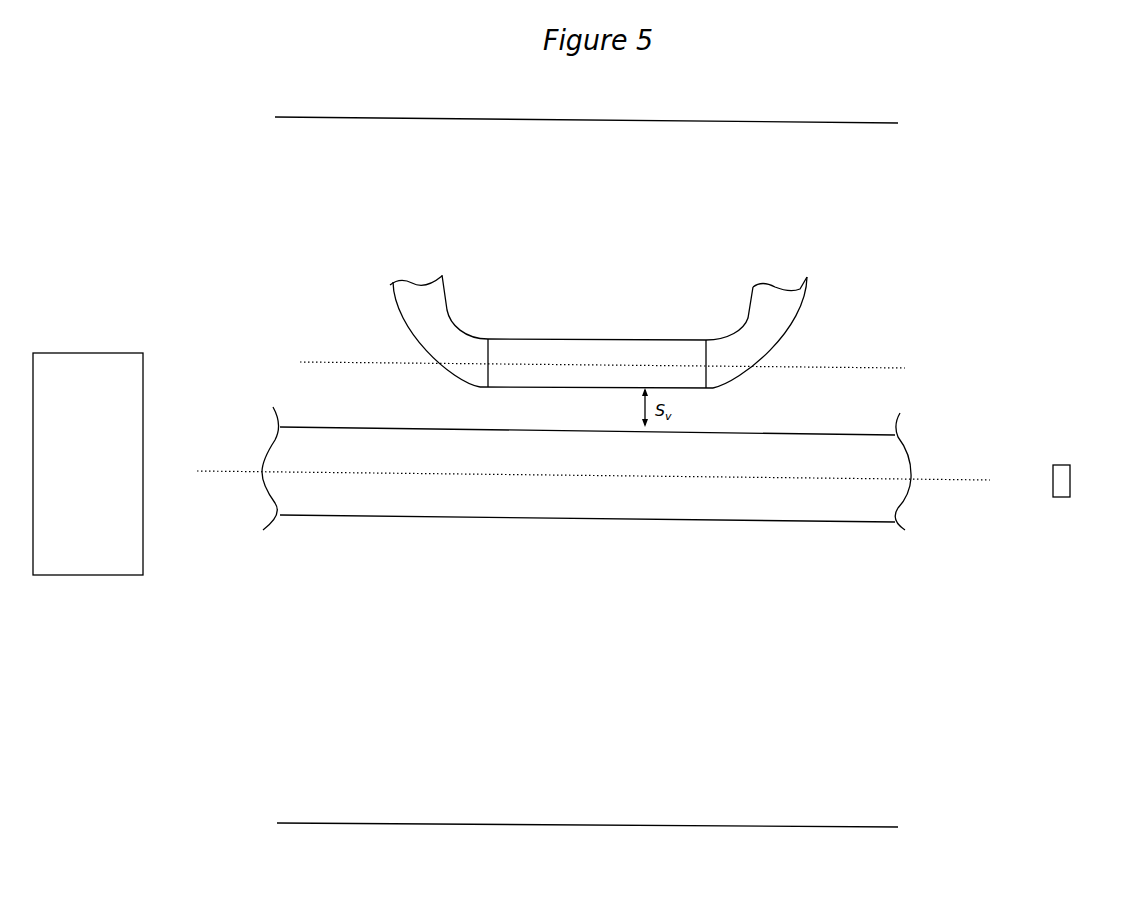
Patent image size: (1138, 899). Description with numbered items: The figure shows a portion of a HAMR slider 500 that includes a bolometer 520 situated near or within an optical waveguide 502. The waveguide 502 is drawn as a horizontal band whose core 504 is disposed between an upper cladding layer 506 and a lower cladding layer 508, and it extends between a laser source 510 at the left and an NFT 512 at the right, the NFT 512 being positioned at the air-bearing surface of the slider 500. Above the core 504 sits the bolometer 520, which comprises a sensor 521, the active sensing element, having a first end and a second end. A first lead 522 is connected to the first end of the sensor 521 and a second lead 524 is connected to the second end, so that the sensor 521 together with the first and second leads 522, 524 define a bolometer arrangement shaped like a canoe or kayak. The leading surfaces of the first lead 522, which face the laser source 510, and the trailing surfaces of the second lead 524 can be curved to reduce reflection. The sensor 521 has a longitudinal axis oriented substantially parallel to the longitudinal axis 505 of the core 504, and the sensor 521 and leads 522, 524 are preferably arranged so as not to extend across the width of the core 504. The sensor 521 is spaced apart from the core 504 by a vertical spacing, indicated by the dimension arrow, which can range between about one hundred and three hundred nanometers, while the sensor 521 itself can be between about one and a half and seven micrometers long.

The HAMR slider 500 is at (962, 80).
The optical waveguide 502 is at (213, 151).
The core 504 is at (677, 495).
The longitudinal axis 505 is at (457, 473).
The cladding layer 506 is at (614, 195).
The cladding layer 508 is at (615, 683).
The laser source 510 is at (87, 352).
The NFT 512 is at (1061, 465).
The bolometer 520 is at (602, 292).
The sensor 521 is at (535, 339).
The first lead 522 is at (447, 310).
The second lead 524 is at (743, 322).